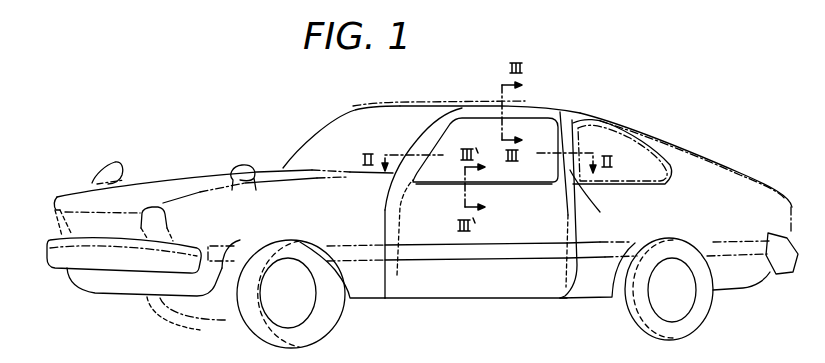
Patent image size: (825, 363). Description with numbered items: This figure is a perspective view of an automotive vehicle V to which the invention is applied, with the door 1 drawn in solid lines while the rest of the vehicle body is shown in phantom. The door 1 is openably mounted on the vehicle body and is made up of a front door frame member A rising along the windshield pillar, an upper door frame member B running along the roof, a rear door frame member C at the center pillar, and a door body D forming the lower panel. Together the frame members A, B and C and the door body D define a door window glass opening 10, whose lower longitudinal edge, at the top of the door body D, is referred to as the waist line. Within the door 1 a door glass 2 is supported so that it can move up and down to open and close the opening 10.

The door 1 is at (487, 228).
The door glass 2 is at (502, 170).
The door window glass opening 10 is at (543, 180).
The front door frame member A is at (448, 130).
The upper door frame member B is at (527, 115).
The rear door frame member C is at (578, 238).
The door body D is at (447, 233).
The vehicle V is at (600, 112).